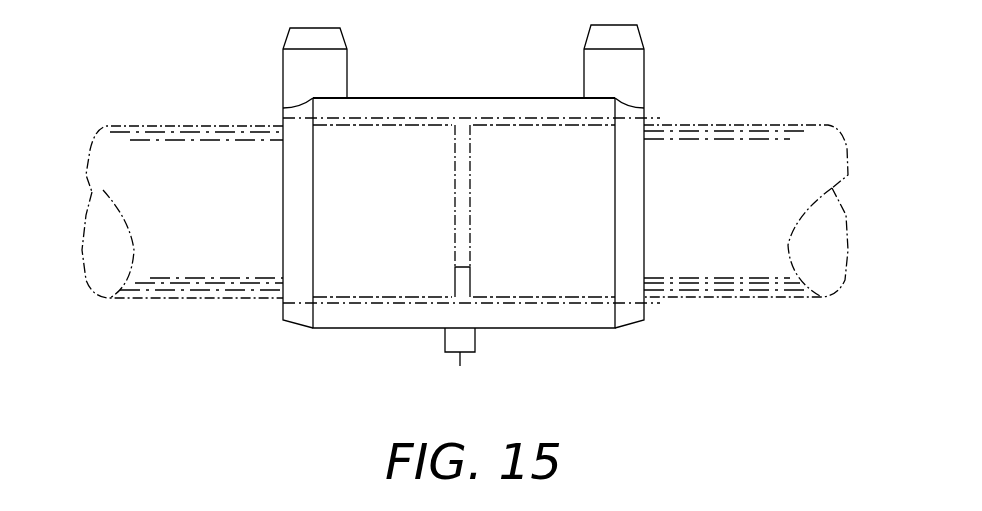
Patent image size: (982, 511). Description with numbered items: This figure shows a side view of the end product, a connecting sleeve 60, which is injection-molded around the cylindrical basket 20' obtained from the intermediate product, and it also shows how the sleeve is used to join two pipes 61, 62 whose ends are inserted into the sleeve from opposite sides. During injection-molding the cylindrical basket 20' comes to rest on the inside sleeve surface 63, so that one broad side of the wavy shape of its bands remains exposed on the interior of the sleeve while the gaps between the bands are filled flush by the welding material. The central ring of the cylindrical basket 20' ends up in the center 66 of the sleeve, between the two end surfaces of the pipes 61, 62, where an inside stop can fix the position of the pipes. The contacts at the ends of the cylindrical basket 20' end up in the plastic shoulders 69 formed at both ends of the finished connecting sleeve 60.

The connecting sleeve 60 is at (444, 87).
The plastic shoulders 69 is at (295, 77).
The inside sleeve surface 63 is at (405, 120).
The cylindrical basket 20' is at (497, 174).
The center of the sleeve 66 is at (460, 362).
The pipe 61 is at (168, 142).
The pipe 62 is at (767, 143).